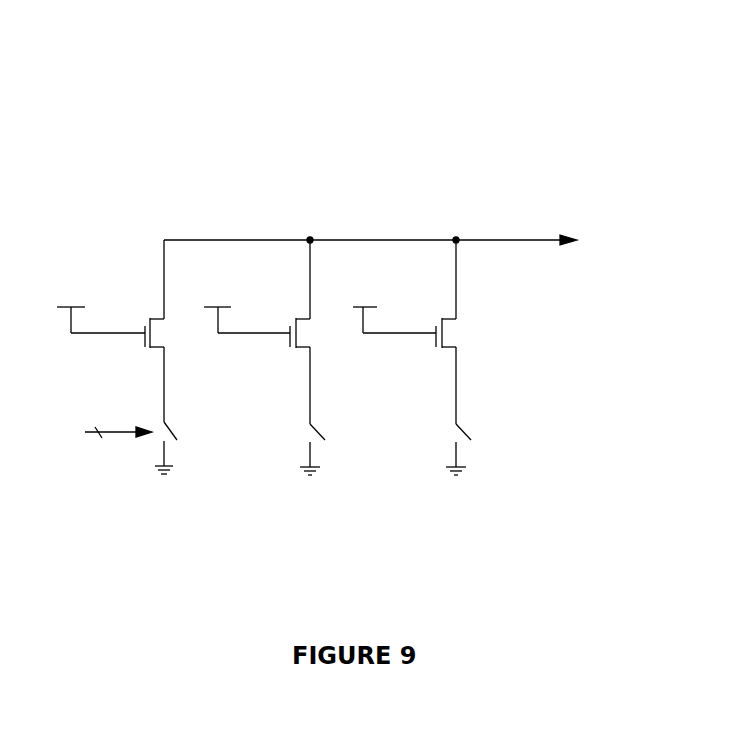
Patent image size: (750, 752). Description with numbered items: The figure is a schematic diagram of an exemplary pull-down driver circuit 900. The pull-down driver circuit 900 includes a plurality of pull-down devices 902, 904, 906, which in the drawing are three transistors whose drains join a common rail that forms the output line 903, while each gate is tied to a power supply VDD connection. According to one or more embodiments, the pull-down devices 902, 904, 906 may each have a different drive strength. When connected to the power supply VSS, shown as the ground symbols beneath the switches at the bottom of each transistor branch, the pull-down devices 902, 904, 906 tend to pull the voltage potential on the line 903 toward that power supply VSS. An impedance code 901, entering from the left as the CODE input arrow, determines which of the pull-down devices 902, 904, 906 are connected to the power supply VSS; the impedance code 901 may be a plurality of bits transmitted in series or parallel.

The pull-down driver circuit 900 is at (658, 86).
The impedance code 901 is at (125, 436).
The pull-down device 902 is at (144, 326).
The line 903 is at (533, 243).
The pull-down device 904 is at (289, 326).
The pull-down device 906 is at (434, 325).